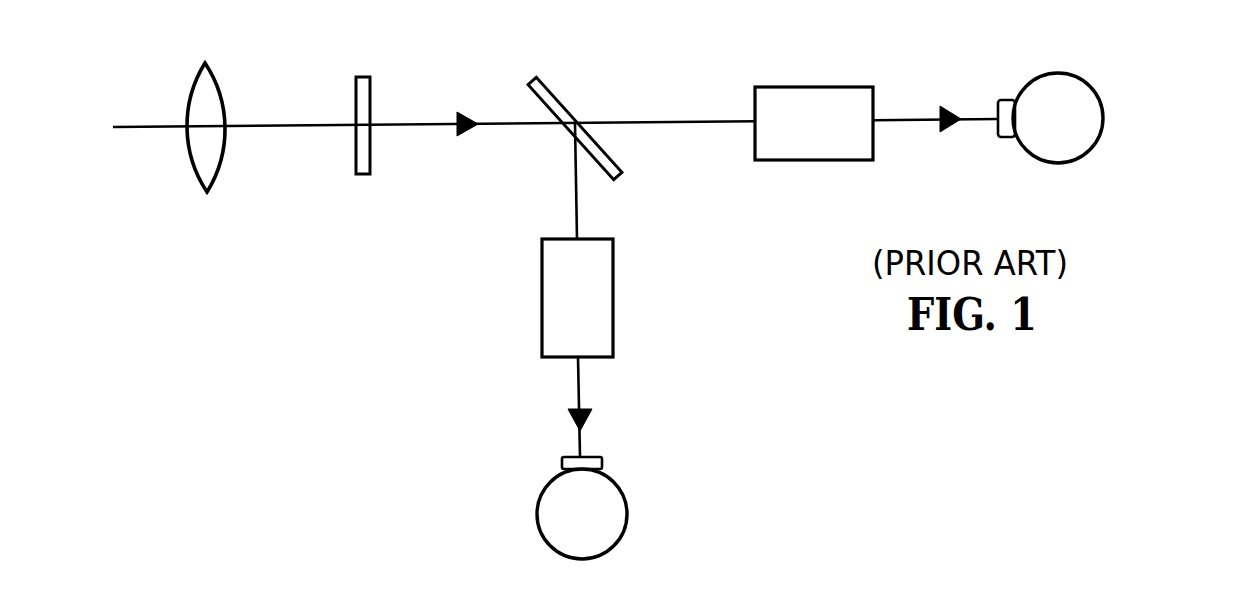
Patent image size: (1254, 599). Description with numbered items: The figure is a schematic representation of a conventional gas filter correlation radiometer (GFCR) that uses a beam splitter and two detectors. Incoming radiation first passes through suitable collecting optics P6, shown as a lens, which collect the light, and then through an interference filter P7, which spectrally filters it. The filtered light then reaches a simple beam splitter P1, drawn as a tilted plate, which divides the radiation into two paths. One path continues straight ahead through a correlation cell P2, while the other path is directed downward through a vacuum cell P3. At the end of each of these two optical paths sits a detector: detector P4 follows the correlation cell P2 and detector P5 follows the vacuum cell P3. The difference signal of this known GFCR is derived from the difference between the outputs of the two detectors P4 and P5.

The beam splitter P1 is at (558, 103).
The correlation cell P2 is at (818, 161).
The vacuum cell P3 is at (613, 316).
The detector P4 is at (1104, 120).
The detector P5 is at (537, 513).
The collecting optics P6 is at (202, 184).
The interference filter P7 is at (370, 95).